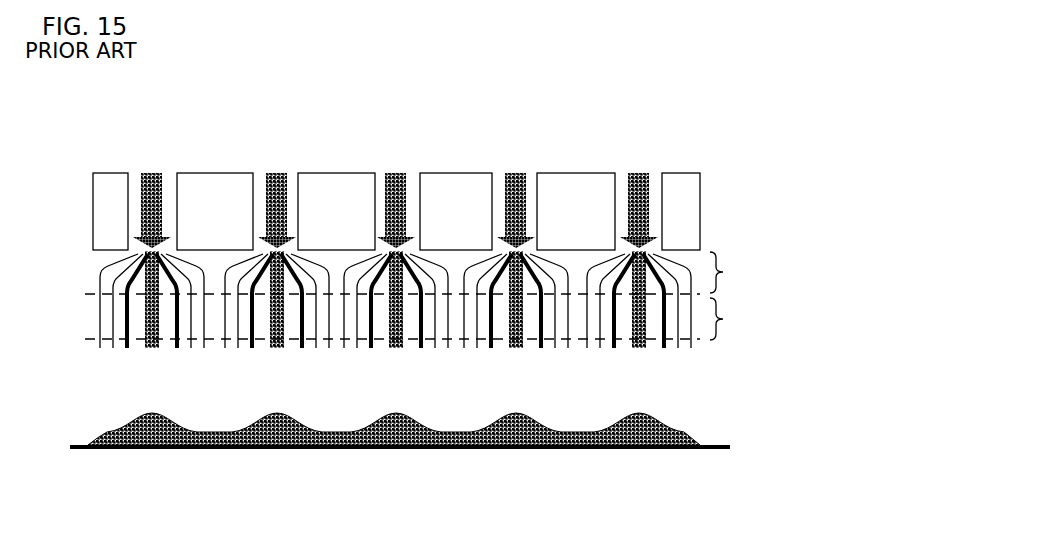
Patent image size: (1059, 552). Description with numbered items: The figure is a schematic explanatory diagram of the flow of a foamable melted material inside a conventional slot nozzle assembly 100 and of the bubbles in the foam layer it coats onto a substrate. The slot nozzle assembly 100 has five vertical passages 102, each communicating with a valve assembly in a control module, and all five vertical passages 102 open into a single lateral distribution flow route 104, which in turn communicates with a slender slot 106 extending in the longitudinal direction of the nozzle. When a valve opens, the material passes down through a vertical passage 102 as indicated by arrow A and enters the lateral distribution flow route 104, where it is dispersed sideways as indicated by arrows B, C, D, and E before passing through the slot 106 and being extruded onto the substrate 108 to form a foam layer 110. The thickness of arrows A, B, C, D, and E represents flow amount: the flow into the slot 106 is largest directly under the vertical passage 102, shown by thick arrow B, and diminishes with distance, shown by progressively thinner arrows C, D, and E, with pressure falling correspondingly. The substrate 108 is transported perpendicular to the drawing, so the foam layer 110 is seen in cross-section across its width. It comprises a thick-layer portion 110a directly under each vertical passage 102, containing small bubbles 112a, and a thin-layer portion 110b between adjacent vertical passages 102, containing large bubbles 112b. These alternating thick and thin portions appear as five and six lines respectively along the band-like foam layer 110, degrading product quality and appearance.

The slot nozzle assembly 100 is at (720, 151).
The vertical passage 102 is at (130, 190).
The arrow A is at (163, 173).
The lateral distribution flow route 104 is at (738, 272).
The slot 106 is at (426, 317).
The arrow B is at (395, 317).
The arrow C is at (395, 318).
The arrow D is at (395, 318).
The arrow E is at (395, 318).
The substrate 108 is at (723, 449).
The foam layer 110 is at (700, 436).
The thick-layer portion 110a is at (138, 424).
The thin-layer portion 110b is at (109, 440).
The bubble 112a is at (137, 449).
The bubble 112b is at (103, 449).